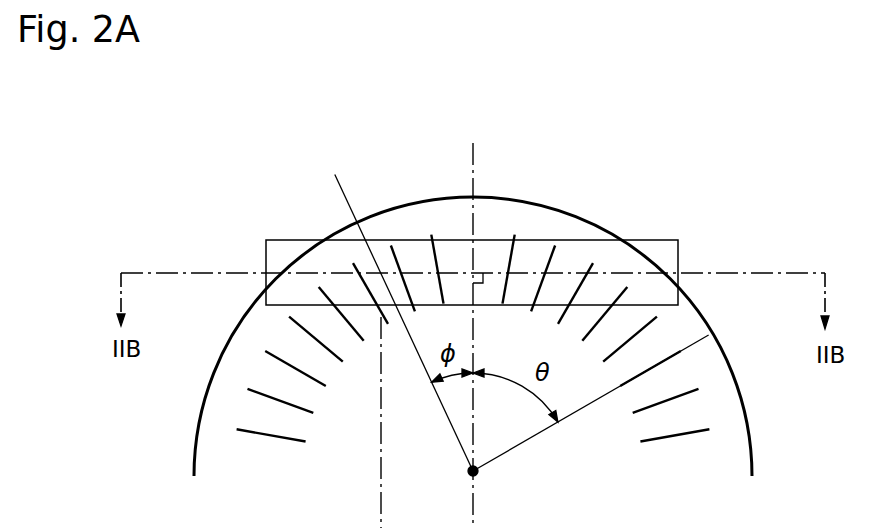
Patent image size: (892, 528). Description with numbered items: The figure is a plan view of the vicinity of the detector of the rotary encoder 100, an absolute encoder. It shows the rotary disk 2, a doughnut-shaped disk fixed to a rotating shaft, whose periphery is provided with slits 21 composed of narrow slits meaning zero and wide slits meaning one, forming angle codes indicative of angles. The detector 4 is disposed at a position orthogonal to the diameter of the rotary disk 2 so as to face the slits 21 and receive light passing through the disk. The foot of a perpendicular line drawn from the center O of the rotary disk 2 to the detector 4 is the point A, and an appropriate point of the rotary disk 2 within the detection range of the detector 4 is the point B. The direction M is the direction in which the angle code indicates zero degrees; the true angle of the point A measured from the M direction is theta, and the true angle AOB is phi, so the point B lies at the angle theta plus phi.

The rotary encoder 100 is at (718, 180).
The rotary disk 2 is at (748, 437).
The detector 4 is at (675, 252).
The slits 21 is at (247, 435).
The point A is at (473, 266).
The point B is at (380, 312).
The M direction M is at (611, 388).
The center O is at (454, 482).